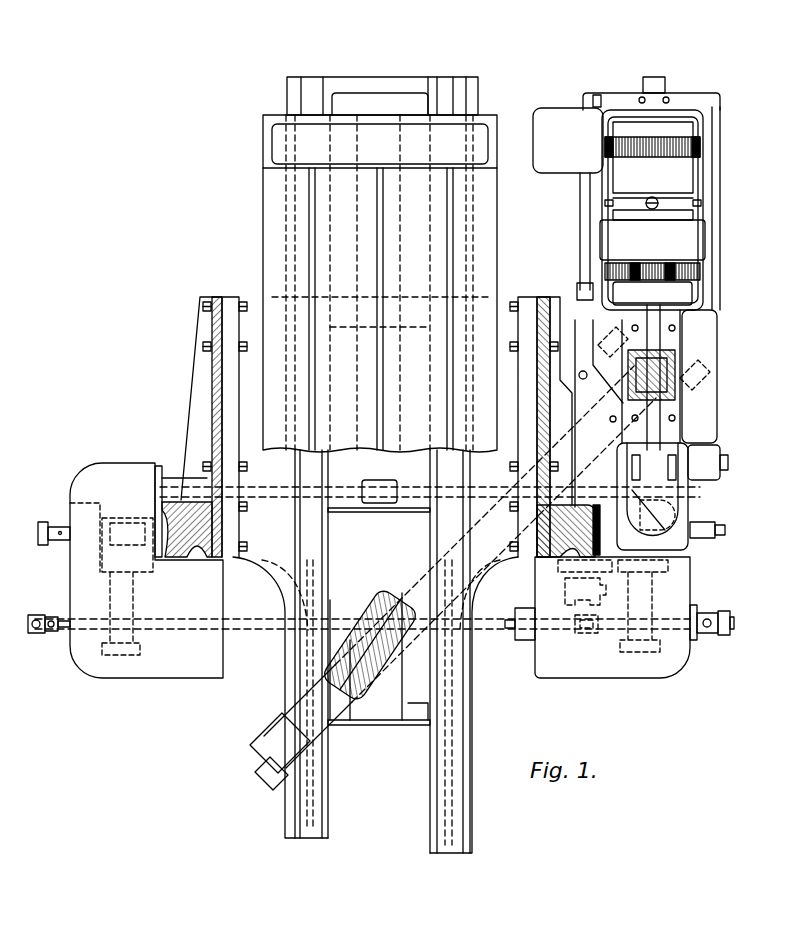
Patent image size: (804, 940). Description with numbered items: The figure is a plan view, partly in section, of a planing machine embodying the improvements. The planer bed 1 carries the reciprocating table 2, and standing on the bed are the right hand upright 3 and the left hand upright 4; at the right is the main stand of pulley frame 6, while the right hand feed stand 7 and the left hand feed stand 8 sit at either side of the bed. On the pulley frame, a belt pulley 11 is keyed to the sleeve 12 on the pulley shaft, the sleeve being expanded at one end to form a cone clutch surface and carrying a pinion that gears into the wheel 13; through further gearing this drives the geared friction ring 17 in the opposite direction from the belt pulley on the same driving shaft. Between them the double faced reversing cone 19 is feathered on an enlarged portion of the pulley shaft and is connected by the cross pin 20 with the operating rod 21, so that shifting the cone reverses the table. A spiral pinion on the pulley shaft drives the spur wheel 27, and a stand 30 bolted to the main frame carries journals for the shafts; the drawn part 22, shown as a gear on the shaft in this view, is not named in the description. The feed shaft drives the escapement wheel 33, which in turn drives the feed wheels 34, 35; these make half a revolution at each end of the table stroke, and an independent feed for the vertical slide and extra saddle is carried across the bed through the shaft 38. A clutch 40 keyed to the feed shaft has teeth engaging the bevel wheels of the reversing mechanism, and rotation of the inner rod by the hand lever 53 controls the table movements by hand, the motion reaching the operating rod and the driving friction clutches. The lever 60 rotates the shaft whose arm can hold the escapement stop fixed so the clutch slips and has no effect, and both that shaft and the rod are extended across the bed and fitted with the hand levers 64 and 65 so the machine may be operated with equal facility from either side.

The planer bed 1 is at (375, 651).
The table 2 is at (380, 264).
The right hand upright 3 is at (566, 427).
The left hand upright 4 is at (201, 427).
The main stand of pulley frame 6 is at (671, 275).
The right hand feed stand 7 is at (597, 617).
The left hand feed stand 8 is at (130, 570).
The belt pulley 11 is at (651, 193).
The sleeve 12 is at (690, 298).
The wheel 13 is at (605, 272).
The geared friction ring 17 is at (652, 171).
The double faced reversing cone 19 is at (653, 203).
The cross pin 20 is at (653, 203).
The operating rod 21 is at (655, 427).
The worm gear 22 is at (651, 375).
The spur wheel 27 is at (690, 395).
The stand 30 is at (568, 204).
The escapement wheel 33 is at (585, 567).
The feed wheel 34 is at (643, 567).
The feed wheel 35 is at (690, 553).
The shaft 38 is at (393, 491).
The clutch 40 is at (453, 578).
The hand lever 53 is at (704, 618).
The lever 60 is at (731, 616).
The hand lever 64 is at (57, 615).
The hand lever 65 is at (34, 616).